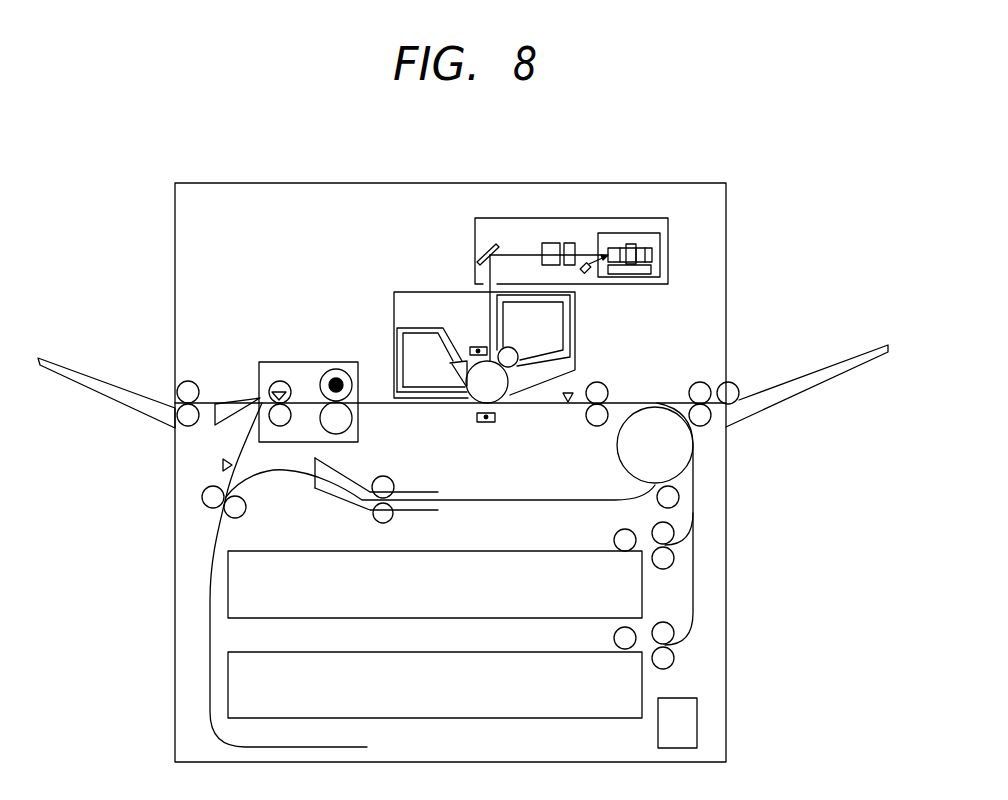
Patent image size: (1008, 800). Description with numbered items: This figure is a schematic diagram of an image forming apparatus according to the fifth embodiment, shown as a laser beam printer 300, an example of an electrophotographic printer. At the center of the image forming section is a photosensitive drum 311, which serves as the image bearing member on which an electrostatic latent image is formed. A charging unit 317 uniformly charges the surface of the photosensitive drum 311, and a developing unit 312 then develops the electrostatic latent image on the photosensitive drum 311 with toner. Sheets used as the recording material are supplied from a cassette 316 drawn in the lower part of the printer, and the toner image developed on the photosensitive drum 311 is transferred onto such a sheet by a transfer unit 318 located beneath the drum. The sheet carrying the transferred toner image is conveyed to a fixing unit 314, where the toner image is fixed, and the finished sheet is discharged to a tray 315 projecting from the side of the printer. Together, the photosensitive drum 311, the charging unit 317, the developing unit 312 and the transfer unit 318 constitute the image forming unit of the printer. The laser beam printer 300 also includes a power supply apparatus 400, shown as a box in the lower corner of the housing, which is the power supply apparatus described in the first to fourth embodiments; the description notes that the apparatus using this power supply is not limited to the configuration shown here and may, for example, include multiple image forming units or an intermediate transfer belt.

The laser beam printer 300 is at (662, 183).
The photosensitive drum 311 is at (495, 385).
The developing unit 312 is at (512, 354).
The fixing unit 314 is at (308, 362).
The tray 315 is at (93, 382).
The cassette 316 is at (622, 597).
The charging unit 317 is at (478, 347).
The transfer unit 318 is at (495, 417).
The power supply apparatus 400 is at (697, 715).